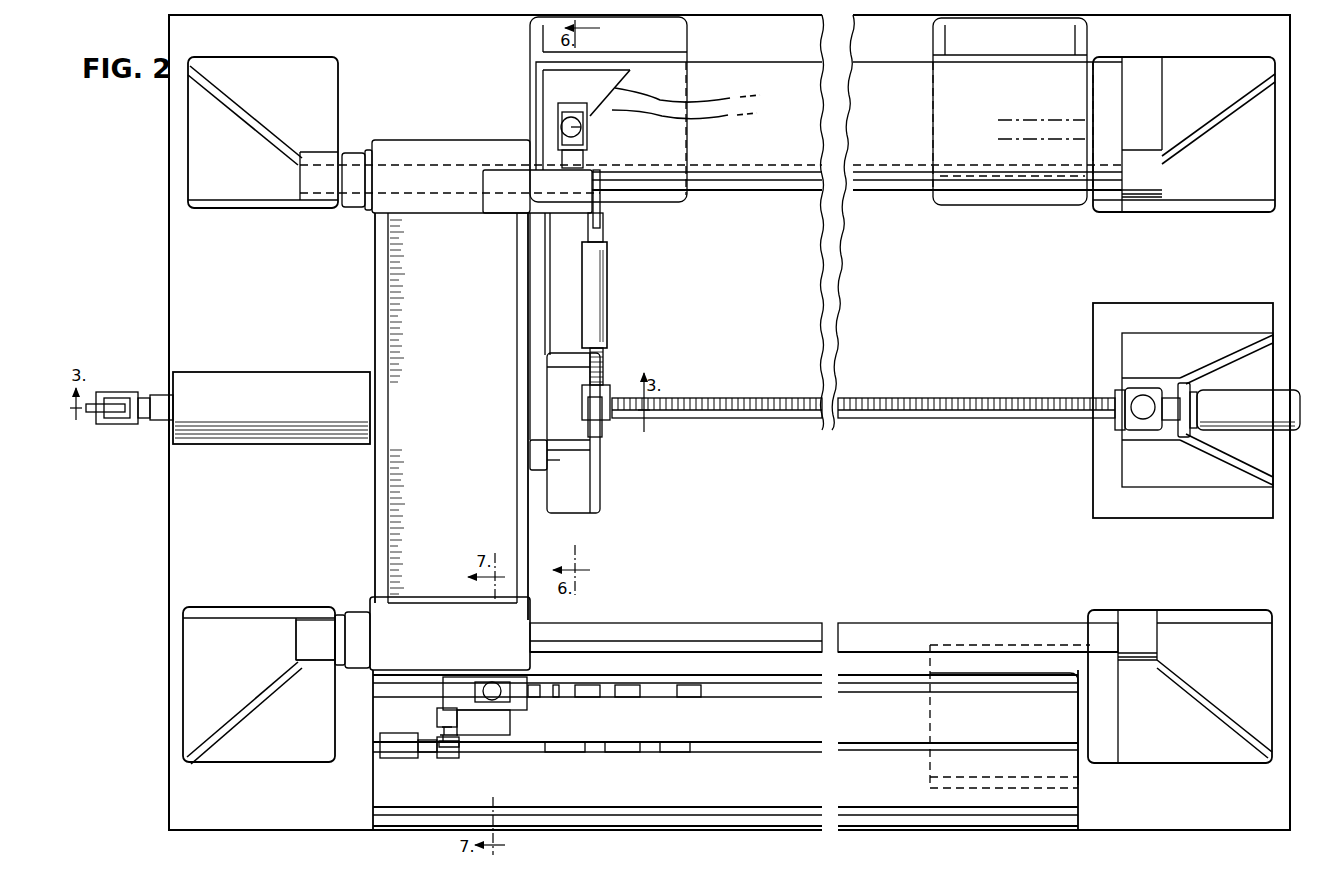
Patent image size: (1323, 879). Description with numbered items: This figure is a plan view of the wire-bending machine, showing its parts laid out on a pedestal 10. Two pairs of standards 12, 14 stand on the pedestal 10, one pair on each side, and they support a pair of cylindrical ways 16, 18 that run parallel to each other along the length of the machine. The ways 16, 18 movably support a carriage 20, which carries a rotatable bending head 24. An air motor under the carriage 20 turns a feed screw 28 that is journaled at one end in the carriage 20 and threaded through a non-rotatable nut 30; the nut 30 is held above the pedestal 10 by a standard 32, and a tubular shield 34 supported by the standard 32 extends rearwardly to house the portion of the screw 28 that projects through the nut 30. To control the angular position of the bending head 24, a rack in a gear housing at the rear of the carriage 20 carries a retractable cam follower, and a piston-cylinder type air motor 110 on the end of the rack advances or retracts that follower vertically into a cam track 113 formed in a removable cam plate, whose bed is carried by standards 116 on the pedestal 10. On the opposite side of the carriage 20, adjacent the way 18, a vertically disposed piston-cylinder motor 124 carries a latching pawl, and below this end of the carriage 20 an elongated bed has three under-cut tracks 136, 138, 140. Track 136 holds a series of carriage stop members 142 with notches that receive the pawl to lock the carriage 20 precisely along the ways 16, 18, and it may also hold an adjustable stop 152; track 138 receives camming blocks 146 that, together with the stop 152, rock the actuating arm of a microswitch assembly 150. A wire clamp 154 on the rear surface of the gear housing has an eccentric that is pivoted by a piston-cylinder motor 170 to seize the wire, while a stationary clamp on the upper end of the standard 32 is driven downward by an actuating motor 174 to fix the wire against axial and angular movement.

The pedestal 10 is at (752, 483).
The standards 12 is at (320, 112).
The standards 14 is at (297, 729).
The cylindrical way 16 is at (770, 183).
The cylindrical way 18 is at (733, 646).
The carriage 20 is at (356, 268).
The rotatable bending head 24 is at (290, 452).
The feed screw 28 is at (964, 396).
The nut 30 is at (1115, 393).
The standard 32 is at (1188, 358).
The tubular shield 34 is at (1241, 406).
The piston-cylinder type air motor 110 is at (588, 128).
The cam track 113 is at (673, 108).
The standards 116 is at (655, 40).
The piston-cylinder motor 124 is at (492, 682).
The track 136 is at (870, 694).
The track 138 is at (868, 752).
The track 140 is at (786, 807).
The carriage stop members 142 is at (625, 700).
The camming blocks 146 is at (535, 756).
The microswitch assembly 150 is at (488, 722).
The adjustable stop 152 is at (440, 728).
The wire clamp 154 is at (622, 369).
The piston-cylinder motor 170 is at (600, 278).
The actuating motor 174 is at (1140, 414).